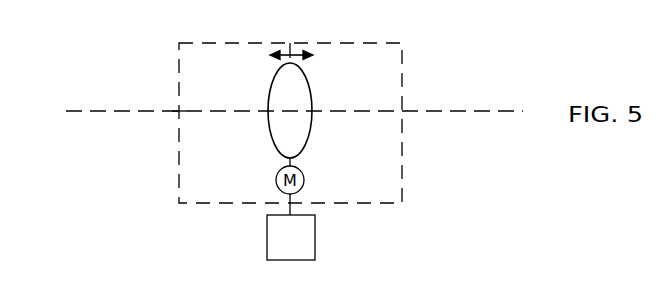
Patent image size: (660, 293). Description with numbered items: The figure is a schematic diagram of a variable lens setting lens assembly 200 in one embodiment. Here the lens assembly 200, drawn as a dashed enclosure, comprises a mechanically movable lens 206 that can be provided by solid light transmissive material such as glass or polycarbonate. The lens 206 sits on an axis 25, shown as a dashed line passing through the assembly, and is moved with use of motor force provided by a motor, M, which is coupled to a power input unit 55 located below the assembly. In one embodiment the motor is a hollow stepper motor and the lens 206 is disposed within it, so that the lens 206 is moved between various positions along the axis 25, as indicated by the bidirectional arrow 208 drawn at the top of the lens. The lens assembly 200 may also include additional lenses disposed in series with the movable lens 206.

The axis 25 is at (470, 111).
The lens assembly 200 is at (372, 43).
The mechanically movable lens 206 is at (310, 72).
The bidirectional arrow 208 is at (290, 44).
The power input unit 55 is at (291, 237).